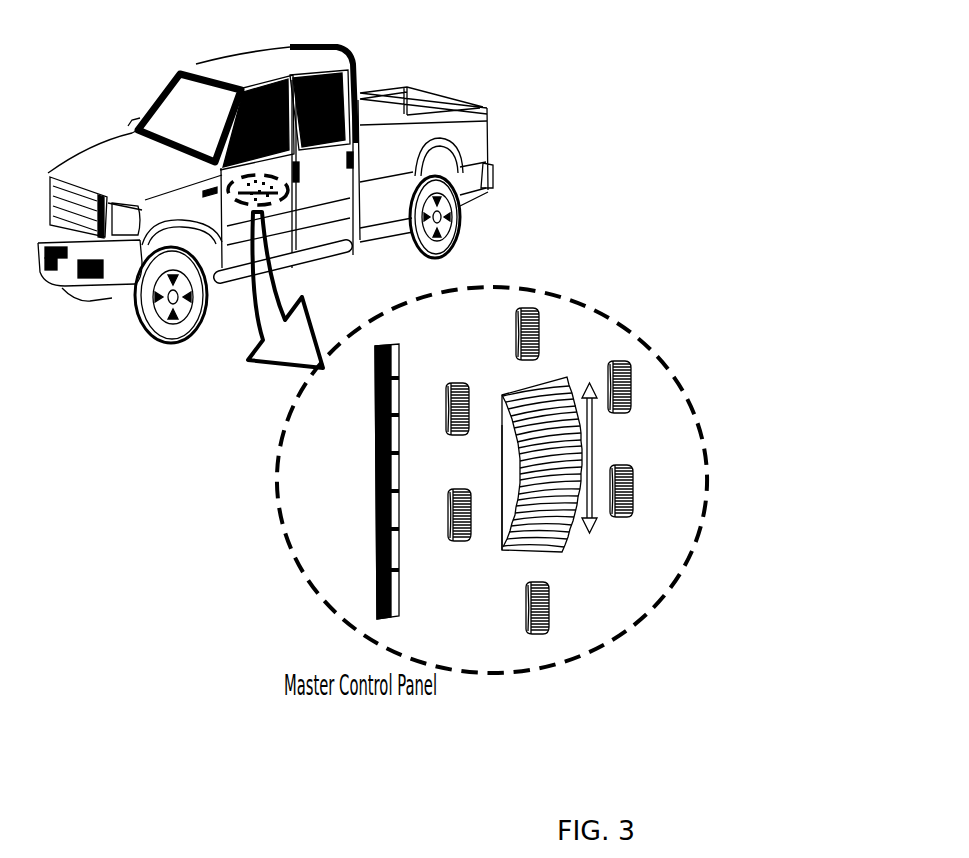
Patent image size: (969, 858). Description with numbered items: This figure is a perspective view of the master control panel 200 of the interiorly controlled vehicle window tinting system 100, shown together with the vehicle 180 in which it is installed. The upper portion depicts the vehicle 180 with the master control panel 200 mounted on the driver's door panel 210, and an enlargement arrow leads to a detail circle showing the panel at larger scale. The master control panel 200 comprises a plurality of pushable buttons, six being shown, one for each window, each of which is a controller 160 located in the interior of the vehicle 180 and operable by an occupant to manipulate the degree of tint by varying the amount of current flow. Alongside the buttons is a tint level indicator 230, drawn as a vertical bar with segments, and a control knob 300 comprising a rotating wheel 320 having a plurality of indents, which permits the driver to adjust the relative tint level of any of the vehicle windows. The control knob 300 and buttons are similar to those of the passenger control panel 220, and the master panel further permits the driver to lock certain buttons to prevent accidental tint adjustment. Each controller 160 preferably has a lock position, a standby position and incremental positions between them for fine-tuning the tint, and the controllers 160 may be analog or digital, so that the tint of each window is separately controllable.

The interiorly controlled vehicle window tinting system 100 is at (585, 48).
The vehicle 180 is at (392, 151).
The master control panel 200 is at (272, 222).
The driver's door panel 210 is at (290, 208).
The passenger control panel 220 is at (536, 268).
The tint level indicator 230 is at (375, 540).
The controller 160 is at (455, 385).
The control knob 300 is at (558, 384).
The rotating wheel 320 is at (503, 555).